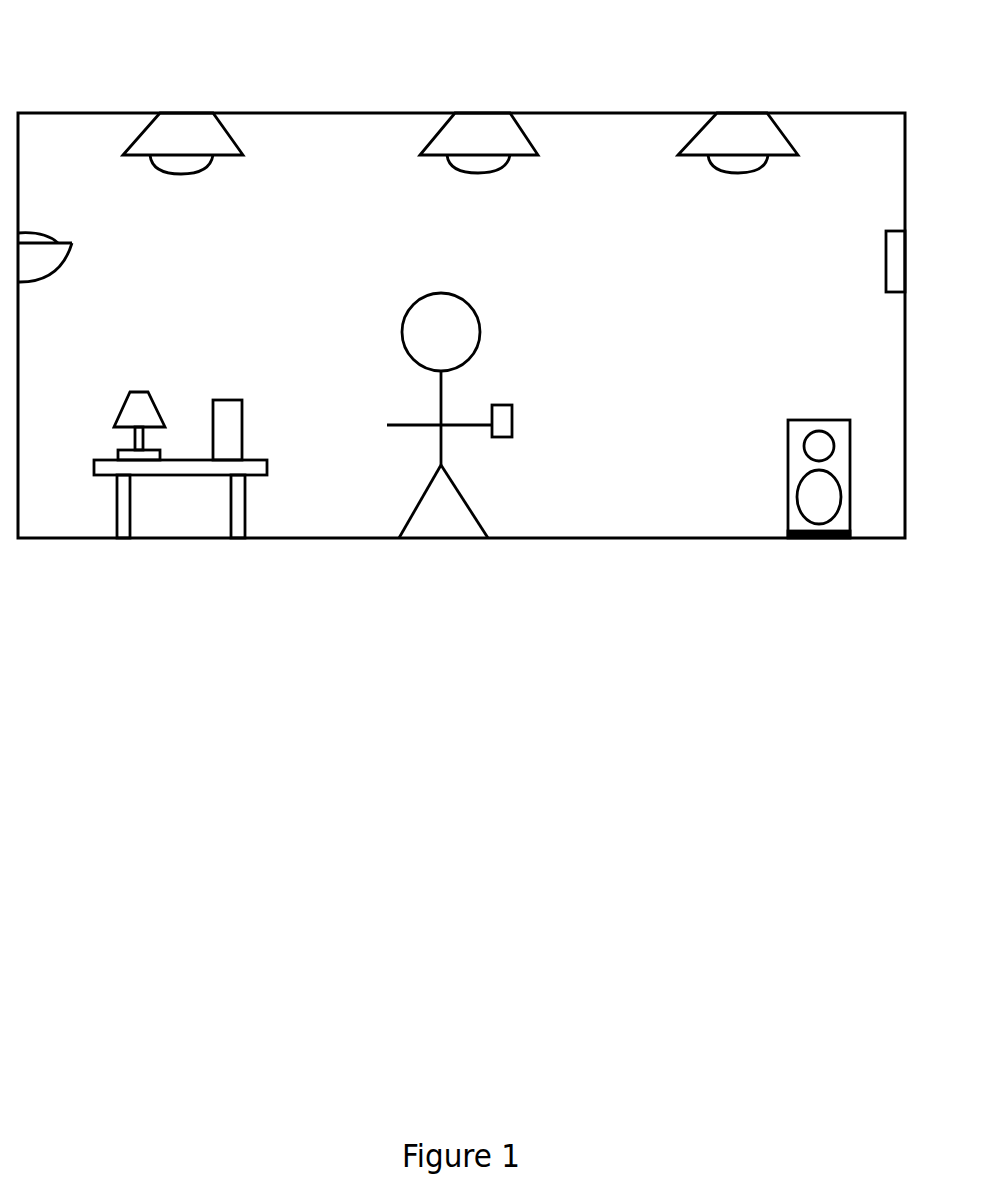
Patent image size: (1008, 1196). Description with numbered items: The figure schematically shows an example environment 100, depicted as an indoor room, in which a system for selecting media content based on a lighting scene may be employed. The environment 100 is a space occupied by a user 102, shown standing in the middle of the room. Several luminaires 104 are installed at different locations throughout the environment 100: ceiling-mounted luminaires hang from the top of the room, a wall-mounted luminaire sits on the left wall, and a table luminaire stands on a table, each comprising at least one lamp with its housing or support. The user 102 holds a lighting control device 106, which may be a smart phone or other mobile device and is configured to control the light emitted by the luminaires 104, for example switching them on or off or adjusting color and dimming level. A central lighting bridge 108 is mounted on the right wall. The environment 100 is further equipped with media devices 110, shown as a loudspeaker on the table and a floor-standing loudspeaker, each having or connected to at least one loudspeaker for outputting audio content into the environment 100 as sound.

The environment 100 is at (143, 88).
The user 102 is at (480, 330).
The luminaire 104 is at (188, 173).
The lighting control device 106 is at (512, 405).
The central lighting bridge 108 is at (886, 232).
The media device 110 is at (243, 400).